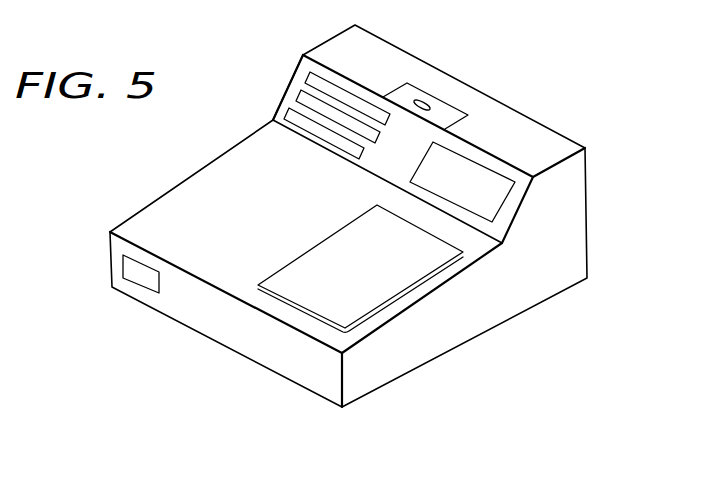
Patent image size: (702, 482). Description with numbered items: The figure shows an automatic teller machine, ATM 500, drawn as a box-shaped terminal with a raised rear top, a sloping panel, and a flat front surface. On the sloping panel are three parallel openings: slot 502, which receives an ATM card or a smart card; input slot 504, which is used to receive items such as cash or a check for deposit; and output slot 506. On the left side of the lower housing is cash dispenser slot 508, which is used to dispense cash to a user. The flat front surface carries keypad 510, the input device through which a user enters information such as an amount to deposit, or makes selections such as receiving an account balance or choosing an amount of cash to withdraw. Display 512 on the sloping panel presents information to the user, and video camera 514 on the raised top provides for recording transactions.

The automatic teller machine 500 is at (158, 147).
The slot 502 is at (310, 71).
The input slot 504 is at (300, 90).
The output slot 506 is at (289, 107).
The cash dispenser slot 508 is at (138, 278).
The keypad 510 is at (317, 258).
The display 512 is at (487, 178).
The video camera 514 is at (392, 92).